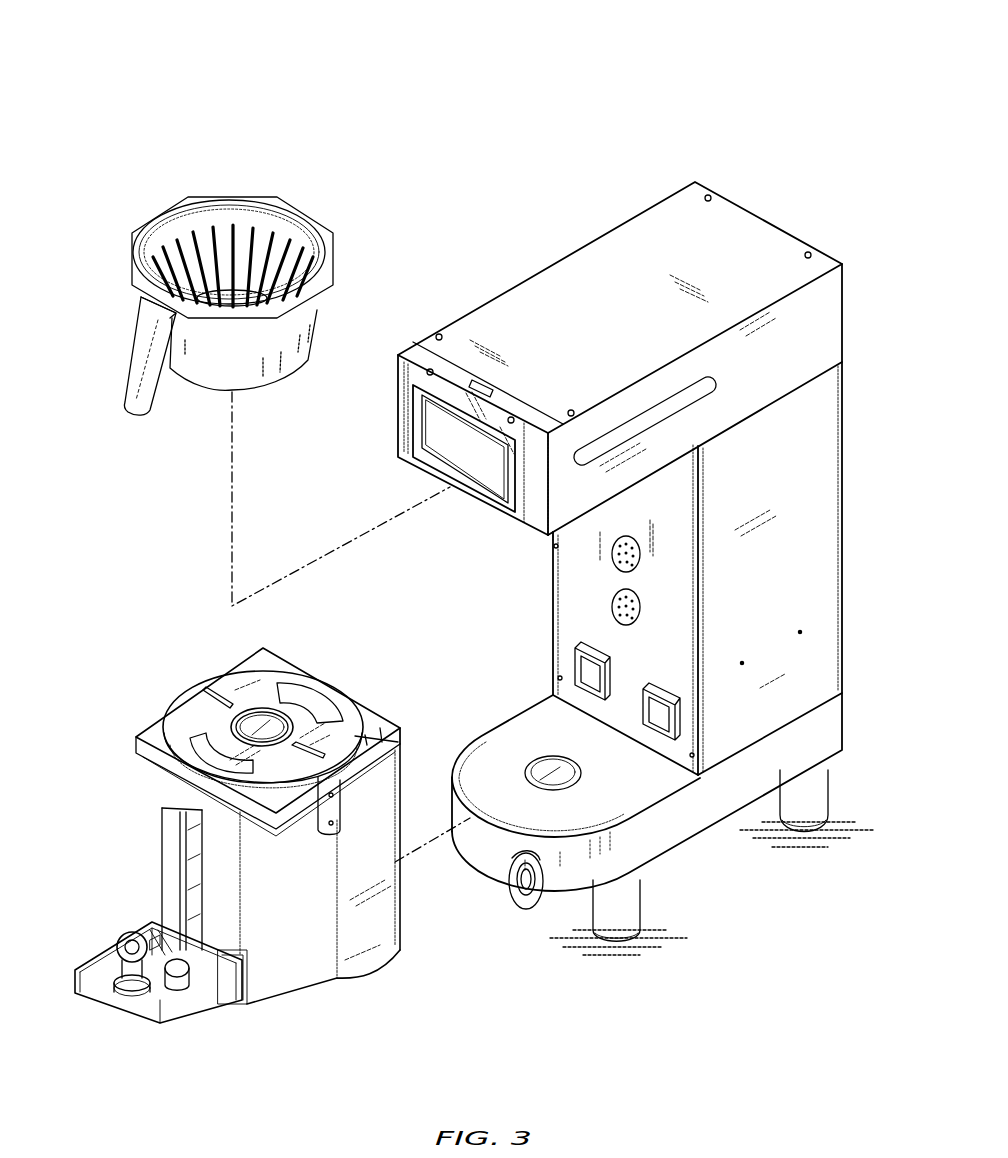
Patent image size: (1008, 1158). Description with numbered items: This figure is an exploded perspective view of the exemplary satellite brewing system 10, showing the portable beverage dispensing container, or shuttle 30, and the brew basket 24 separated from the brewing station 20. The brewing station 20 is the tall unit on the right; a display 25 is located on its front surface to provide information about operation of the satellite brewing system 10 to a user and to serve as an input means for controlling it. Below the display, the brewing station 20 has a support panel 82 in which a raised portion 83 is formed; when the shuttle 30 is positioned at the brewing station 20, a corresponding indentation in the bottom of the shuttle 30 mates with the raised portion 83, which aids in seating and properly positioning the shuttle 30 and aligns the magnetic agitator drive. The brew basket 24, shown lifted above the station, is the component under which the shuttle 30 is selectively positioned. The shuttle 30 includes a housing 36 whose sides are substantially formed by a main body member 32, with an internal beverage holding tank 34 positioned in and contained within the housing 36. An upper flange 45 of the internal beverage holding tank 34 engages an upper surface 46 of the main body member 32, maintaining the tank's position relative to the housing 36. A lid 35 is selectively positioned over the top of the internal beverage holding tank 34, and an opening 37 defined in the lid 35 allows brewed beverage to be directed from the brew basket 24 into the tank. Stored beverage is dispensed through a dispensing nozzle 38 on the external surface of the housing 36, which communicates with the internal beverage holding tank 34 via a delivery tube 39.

The satellite brewing system 10 is at (256, 74).
The brewing station 20 is at (841, 470).
The brew basket 24 is at (131, 352).
The display 25 is at (433, 433).
The portable beverage dispensing container 30 is at (160, 853).
The main body member 32 is at (165, 877).
The internal beverage holding tank 34 is at (263, 653).
The lid 35 is at (186, 713).
The housing 36 is at (281, 958).
The opening 37 is at (250, 713).
The dispensing nozzle 38 is at (122, 1002).
The delivery tube 39 is at (183, 990).
The upper flange 45 is at (372, 720).
The upper surface 46 is at (390, 762).
The support panel 82 is at (506, 738).
The raised portion 83 is at (583, 772).